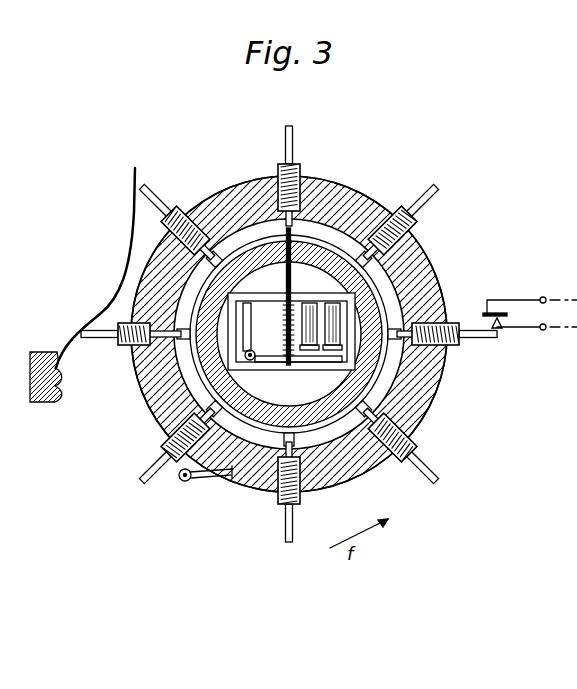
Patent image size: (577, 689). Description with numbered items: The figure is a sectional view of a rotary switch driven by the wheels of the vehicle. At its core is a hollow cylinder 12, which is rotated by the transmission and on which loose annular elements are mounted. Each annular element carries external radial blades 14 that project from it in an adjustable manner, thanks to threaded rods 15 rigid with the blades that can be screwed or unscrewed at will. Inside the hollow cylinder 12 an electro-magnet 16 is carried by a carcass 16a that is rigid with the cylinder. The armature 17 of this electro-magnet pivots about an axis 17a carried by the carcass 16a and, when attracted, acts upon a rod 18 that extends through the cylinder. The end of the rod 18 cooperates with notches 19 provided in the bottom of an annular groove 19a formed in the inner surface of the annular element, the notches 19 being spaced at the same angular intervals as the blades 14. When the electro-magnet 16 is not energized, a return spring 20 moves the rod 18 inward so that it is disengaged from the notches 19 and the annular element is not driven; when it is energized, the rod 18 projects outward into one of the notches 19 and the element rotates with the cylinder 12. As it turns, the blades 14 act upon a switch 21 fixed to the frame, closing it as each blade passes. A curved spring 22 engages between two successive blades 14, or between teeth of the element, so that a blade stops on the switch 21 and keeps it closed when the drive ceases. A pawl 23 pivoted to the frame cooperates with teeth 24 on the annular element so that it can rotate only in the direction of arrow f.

The hollow cylinder 12 is at (360, 284).
The radial blades 14 is at (290, 141).
The threaded rods 15 is at (133, 344).
The electro-magnet 16 is at (340, 316).
The carcass 16a is at (326, 297).
The armature 17 is at (312, 363).
The axis 17a is at (251, 363).
The rod 18 is at (350, 220).
The notches 19 is at (213, 253).
The annular groove 19a is at (253, 288).
The return spring 20 is at (287, 328).
The switch 21 is at (525, 329).
The spring 22 is at (127, 261).
The pawl 23 is at (212, 476).
The teeth 24 is at (143, 398).